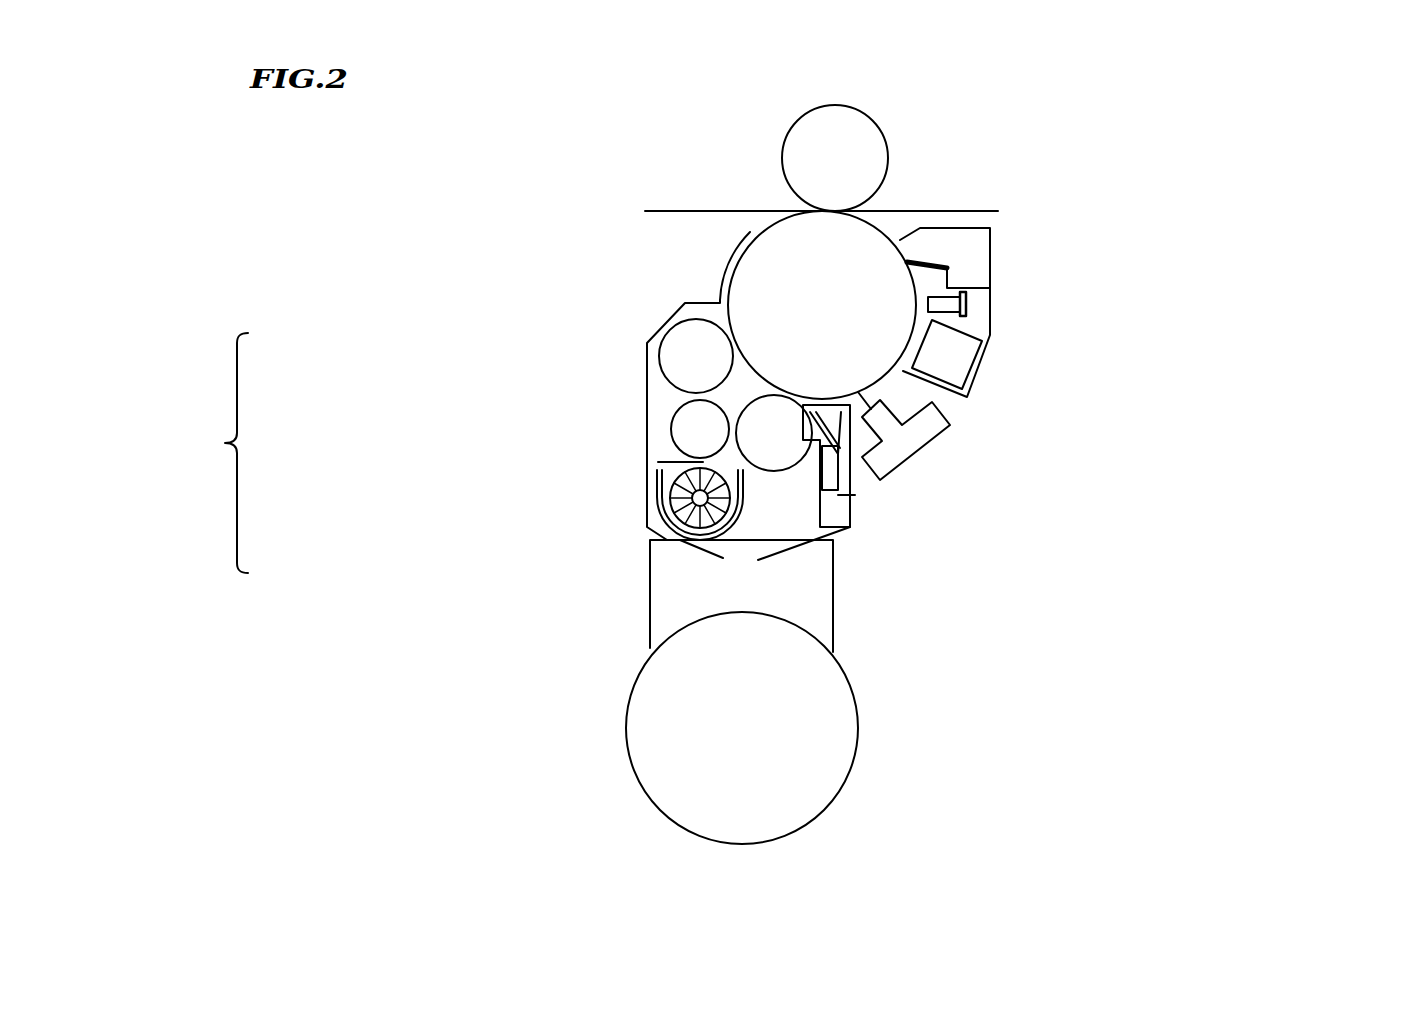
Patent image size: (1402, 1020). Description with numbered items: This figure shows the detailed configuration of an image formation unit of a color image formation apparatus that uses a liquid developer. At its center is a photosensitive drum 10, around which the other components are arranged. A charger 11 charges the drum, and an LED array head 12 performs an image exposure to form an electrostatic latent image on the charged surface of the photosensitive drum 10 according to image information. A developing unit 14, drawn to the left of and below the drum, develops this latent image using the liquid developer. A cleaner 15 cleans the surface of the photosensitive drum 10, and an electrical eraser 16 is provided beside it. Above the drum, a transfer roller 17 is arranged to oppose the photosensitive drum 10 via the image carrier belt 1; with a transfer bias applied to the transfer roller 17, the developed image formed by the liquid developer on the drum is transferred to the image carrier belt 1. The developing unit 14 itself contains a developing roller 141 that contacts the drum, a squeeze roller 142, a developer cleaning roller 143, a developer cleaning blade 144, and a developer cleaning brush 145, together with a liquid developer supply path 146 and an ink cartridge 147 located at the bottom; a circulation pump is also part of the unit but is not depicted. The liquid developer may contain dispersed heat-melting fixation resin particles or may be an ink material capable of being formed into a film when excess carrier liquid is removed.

The image carrier belt 1 is at (737, 208).
The photosensitive drum 10 is at (755, 270).
The charger 11 is at (958, 370).
The LED array head 12 is at (927, 437).
The developing unit 14 is at (237, 416).
The cleaner 15 is at (975, 260).
The electrical eraser 16 is at (966, 303).
The transfer roller 17 is at (858, 143).
The developing roller 141 is at (783, 471).
The squeeze roller 142 is at (662, 365).
The developer cleaning roller 143 is at (677, 437).
The developer cleaning blade 144 is at (658, 462).
The developer cleaning brush 145 is at (650, 507).
The liquid developer supply path 146 is at (855, 495).
The ink cartridge 147 is at (633, 738).